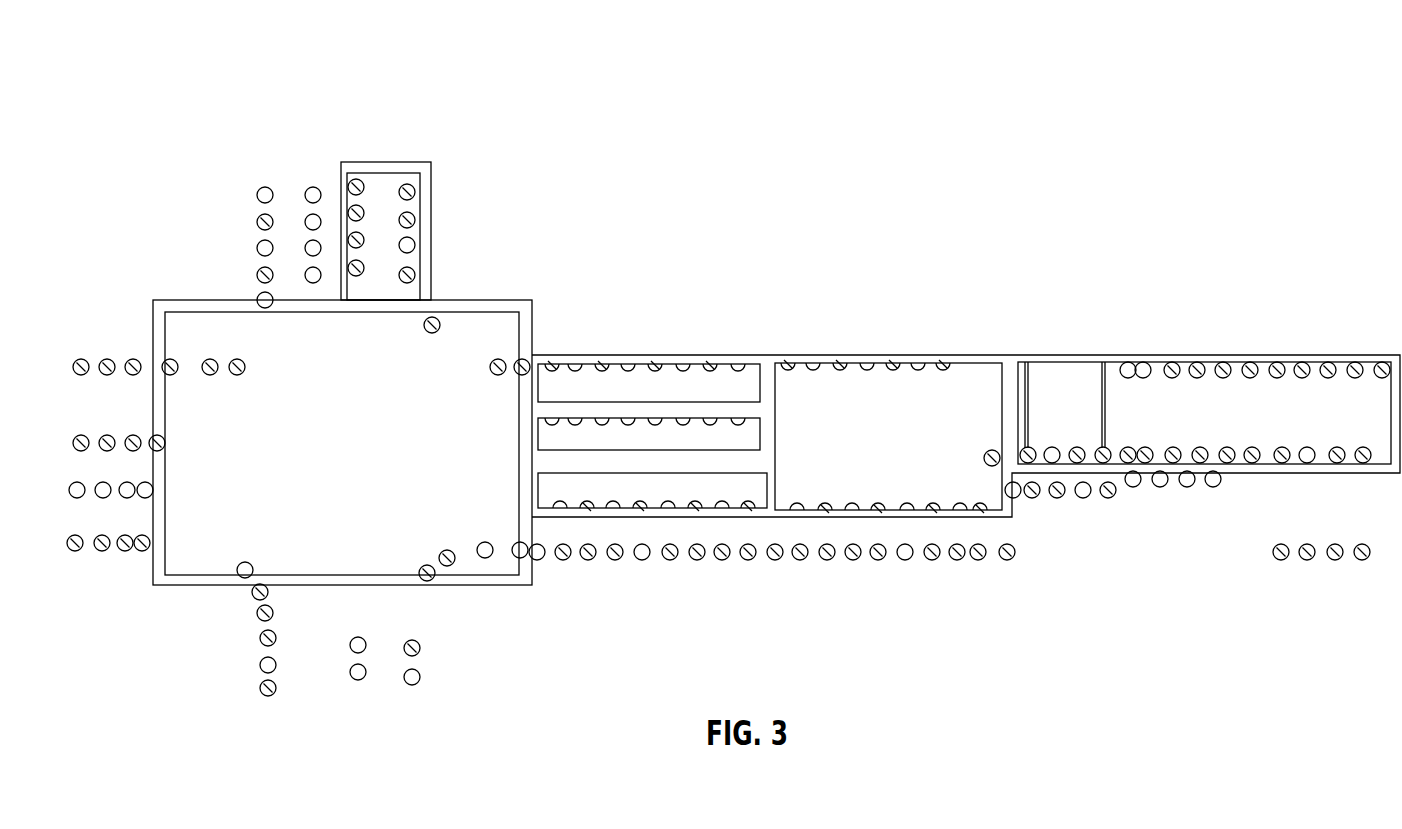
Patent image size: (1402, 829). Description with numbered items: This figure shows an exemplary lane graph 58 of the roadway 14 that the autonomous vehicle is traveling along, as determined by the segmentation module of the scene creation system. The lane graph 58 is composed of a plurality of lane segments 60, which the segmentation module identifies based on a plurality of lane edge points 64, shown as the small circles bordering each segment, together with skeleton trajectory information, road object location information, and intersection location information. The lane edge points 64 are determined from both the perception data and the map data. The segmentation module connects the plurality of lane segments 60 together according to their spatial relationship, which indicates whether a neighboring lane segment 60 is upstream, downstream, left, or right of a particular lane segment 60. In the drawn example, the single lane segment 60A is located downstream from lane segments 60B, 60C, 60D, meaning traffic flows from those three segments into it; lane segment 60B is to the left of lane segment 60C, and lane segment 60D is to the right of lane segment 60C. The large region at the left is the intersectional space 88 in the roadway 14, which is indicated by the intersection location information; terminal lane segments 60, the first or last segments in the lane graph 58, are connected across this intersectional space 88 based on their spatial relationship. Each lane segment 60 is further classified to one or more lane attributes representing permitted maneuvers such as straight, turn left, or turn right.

The lane graph 58 is at (1187, 90).
The intersectional space 88 is at (233, 331).
The lane segments 60 is at (432, 205).
The single lane segment 60A is at (825, 355).
The lane segment 60B is at (595, 355).
The lane segment 60C is at (657, 442).
The lane segment 60D is at (608, 515).
The roadway 14 is at (1060, 378).
The lane edge points 64 is at (257, 277).